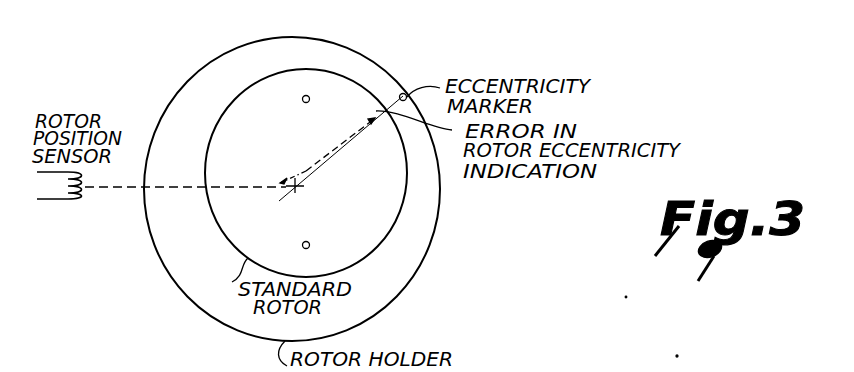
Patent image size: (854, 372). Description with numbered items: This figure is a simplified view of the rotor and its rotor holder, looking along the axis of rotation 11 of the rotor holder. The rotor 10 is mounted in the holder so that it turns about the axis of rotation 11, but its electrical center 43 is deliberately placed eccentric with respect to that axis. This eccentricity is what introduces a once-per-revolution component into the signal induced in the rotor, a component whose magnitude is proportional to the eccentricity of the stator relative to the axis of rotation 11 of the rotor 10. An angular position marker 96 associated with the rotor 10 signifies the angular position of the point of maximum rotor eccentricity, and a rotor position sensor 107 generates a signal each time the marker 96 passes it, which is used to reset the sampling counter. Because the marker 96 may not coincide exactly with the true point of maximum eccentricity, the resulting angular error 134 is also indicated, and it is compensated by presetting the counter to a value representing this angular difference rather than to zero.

The rotor 10 is at (377, 233).
The axis of rotation 11 is at (292, 188).
The electrical center 43 is at (307, 172).
The angular position marker 96 is at (405, 93).
The rotor position sensor 107 is at (82, 199).
The angular error 134 is at (368, 114).